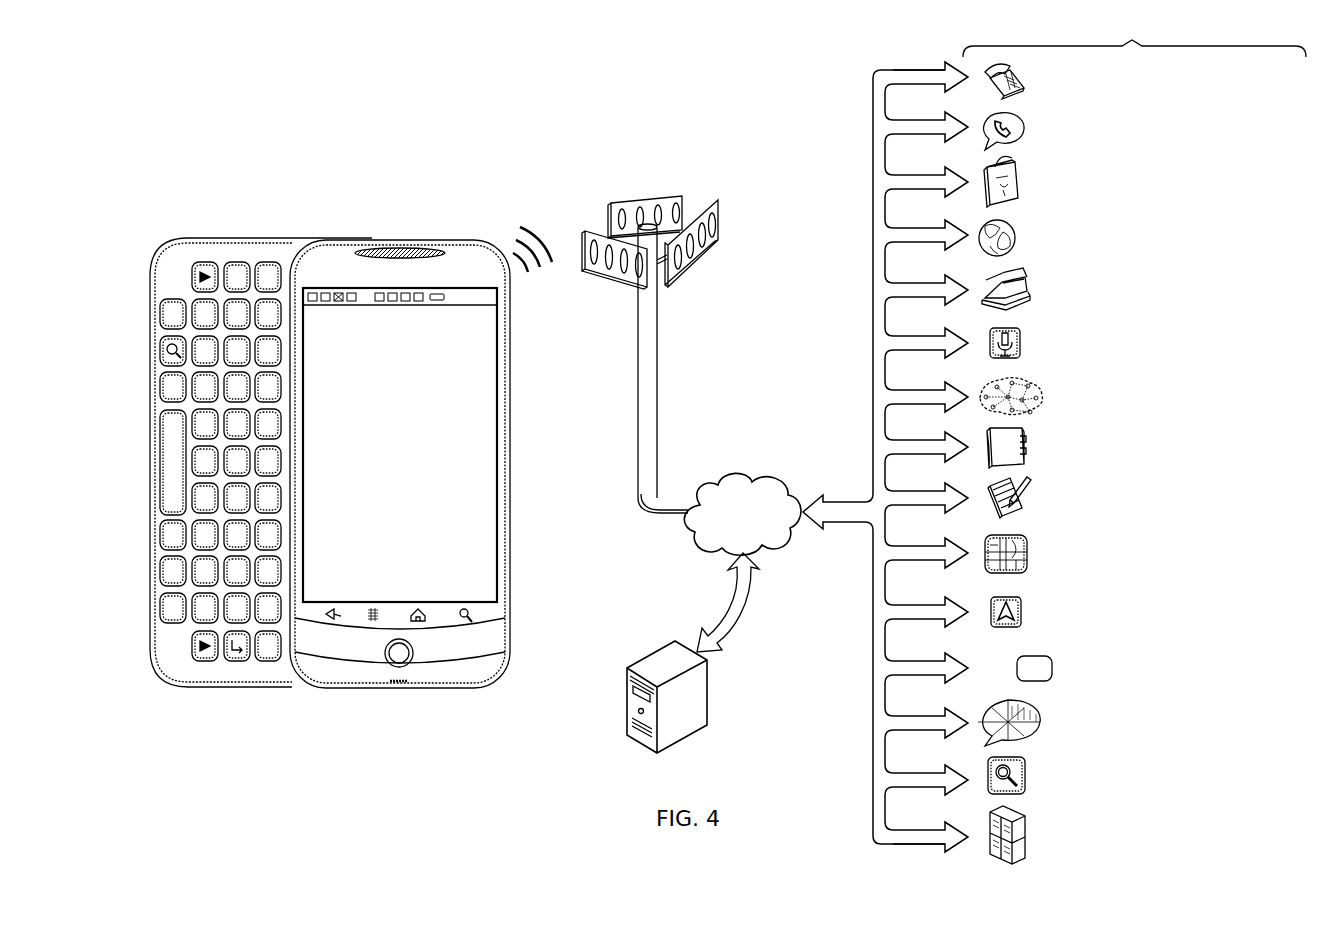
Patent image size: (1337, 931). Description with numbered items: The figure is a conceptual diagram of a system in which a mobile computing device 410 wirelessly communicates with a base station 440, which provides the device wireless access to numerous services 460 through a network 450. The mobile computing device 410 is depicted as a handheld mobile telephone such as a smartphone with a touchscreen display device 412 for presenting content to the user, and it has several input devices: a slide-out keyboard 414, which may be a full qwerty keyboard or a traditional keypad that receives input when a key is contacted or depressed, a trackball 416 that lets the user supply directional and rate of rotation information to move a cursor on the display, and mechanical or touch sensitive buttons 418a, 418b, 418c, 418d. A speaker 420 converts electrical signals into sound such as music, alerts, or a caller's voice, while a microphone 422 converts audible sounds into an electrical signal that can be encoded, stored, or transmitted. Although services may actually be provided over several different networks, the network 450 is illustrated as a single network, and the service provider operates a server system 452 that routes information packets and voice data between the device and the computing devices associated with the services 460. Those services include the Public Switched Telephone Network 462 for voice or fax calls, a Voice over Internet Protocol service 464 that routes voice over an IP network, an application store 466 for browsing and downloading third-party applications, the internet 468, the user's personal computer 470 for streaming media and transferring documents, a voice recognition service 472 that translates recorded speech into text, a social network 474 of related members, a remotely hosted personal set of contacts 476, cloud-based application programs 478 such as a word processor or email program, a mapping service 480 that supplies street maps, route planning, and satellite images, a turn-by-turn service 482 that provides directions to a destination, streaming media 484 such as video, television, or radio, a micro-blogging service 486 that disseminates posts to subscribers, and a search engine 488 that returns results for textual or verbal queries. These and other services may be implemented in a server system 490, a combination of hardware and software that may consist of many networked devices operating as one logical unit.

The mobile computing device 410 is at (451, 184).
The touchscreen display device 412 is at (500, 455).
The keyboard 414 is at (262, 238).
The trackball 416 is at (413, 655).
The button 418a is at (337, 610).
The button 418b is at (373, 608).
The button 418c is at (418, 610).
The button 418d is at (466, 610).
The speaker 420 is at (405, 250).
The microphone 422 is at (398, 686).
The base station 440 is at (698, 173).
The network 450 is at (745, 475).
The server system 452 is at (707, 697).
The services 460 is at (1054, 440).
The Public Switched Telephone Network 462 is at (1022, 82).
The Voice over Internet Protocol service 464 is at (1024, 128).
The application store 466 is at (1022, 182).
The internet 468 is at (1017, 232).
The personal computer 470 is at (1030, 283).
The voice recognition service 472 is at (1020, 340).
The social network 474 is at (1040, 392).
The contacts 476 is at (1025, 450).
The cloud-based application programs 478 is at (1026, 502).
The mapping service 480 is at (1027, 556).
The turn-by-turn service 482 is at (1021, 608).
The streaming media 484 is at (1052, 665).
The micro-blogging service 486 is at (1040, 720).
The search engine 488 is at (1026, 778).
The server system 490 is at (1027, 832).